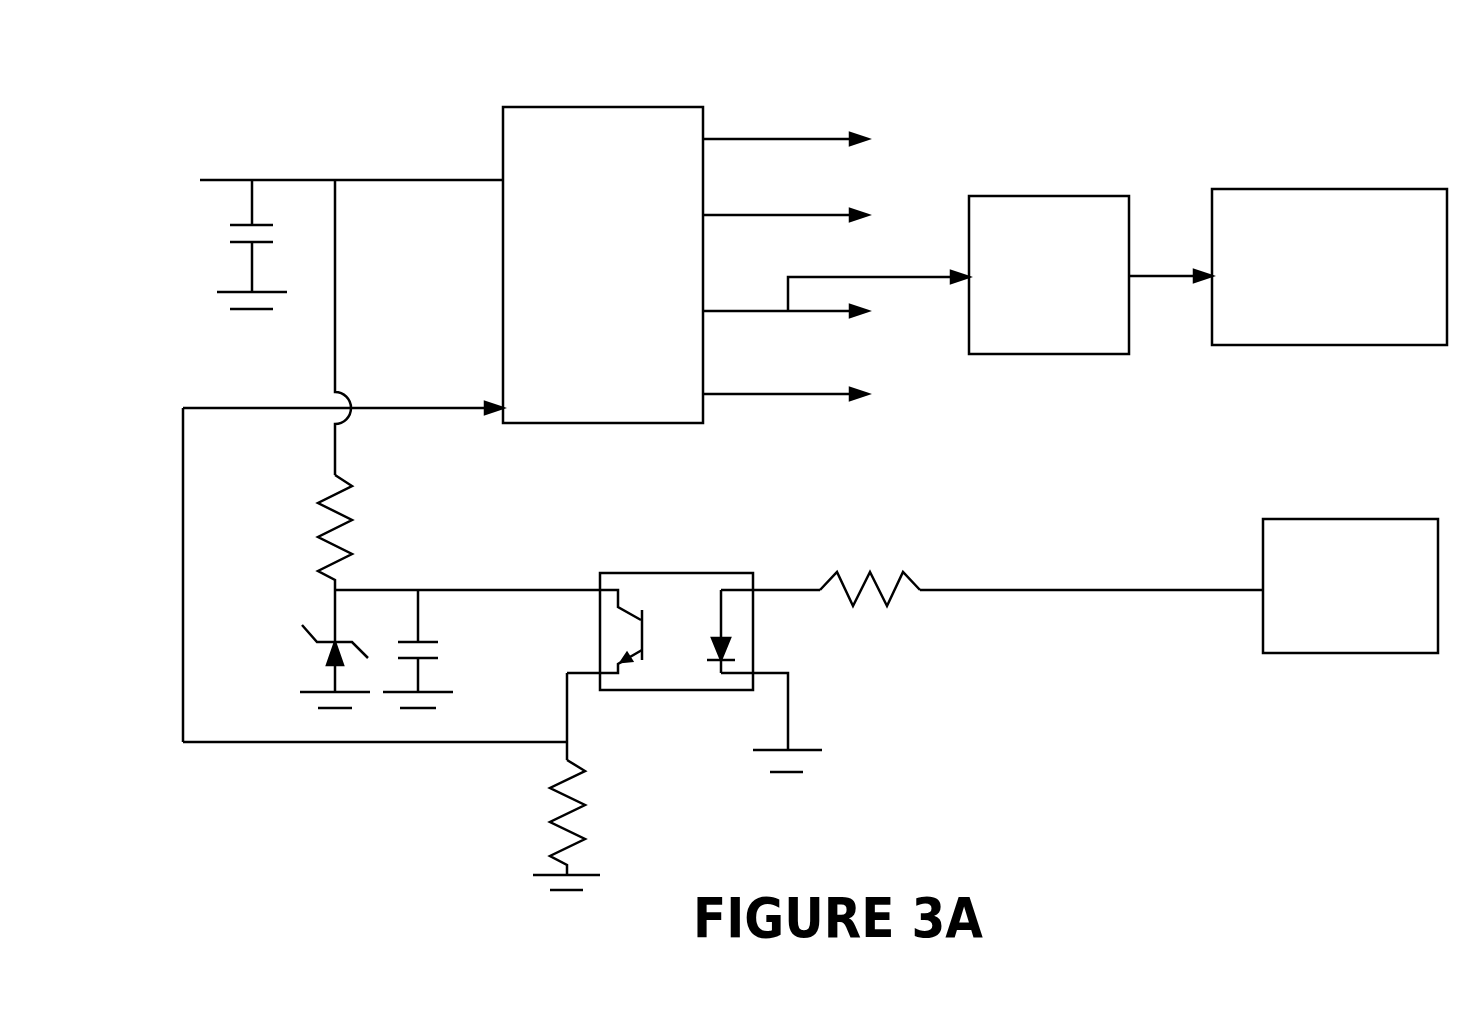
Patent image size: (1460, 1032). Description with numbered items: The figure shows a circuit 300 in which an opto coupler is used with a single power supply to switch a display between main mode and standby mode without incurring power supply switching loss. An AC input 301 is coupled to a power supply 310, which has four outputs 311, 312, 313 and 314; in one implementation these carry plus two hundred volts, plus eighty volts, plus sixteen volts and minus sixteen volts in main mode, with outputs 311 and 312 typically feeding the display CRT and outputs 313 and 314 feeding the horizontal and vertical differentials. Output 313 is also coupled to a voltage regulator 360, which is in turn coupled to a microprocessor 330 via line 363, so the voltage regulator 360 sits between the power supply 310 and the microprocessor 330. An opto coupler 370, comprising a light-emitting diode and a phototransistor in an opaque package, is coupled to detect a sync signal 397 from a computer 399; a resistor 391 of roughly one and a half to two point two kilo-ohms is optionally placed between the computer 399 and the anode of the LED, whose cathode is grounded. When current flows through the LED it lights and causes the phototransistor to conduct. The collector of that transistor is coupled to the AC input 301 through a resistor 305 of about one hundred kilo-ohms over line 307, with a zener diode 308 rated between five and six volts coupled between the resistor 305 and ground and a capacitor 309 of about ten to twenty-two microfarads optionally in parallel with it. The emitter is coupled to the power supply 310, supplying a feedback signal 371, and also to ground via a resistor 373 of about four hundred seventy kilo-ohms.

The circuit 300 is at (247, 120).
The AC input 301 is at (351, 317).
The resistor 305 is at (273, 532).
The line 307 is at (492, 573).
The zener diode 308 is at (300, 649).
The capacitor 309 is at (480, 649).
The power supply 310 is at (622, 292).
The output 311 is at (785, 131).
The output 312 is at (785, 206).
The output 313 is at (836, 294).
The output 314 is at (785, 386).
The microprocessor 330 is at (1350, 294).
The voltage regulator 360 is at (1068, 313).
The line 363 is at (1172, 258).
The opto coupler 370 is at (694, 672).
The feedback signal 371 is at (567, 716).
The resistor 373 is at (620, 825).
The resistor 391 is at (871, 616).
The sync signal 397 is at (1092, 587).
The computer 399 is at (1370, 610).